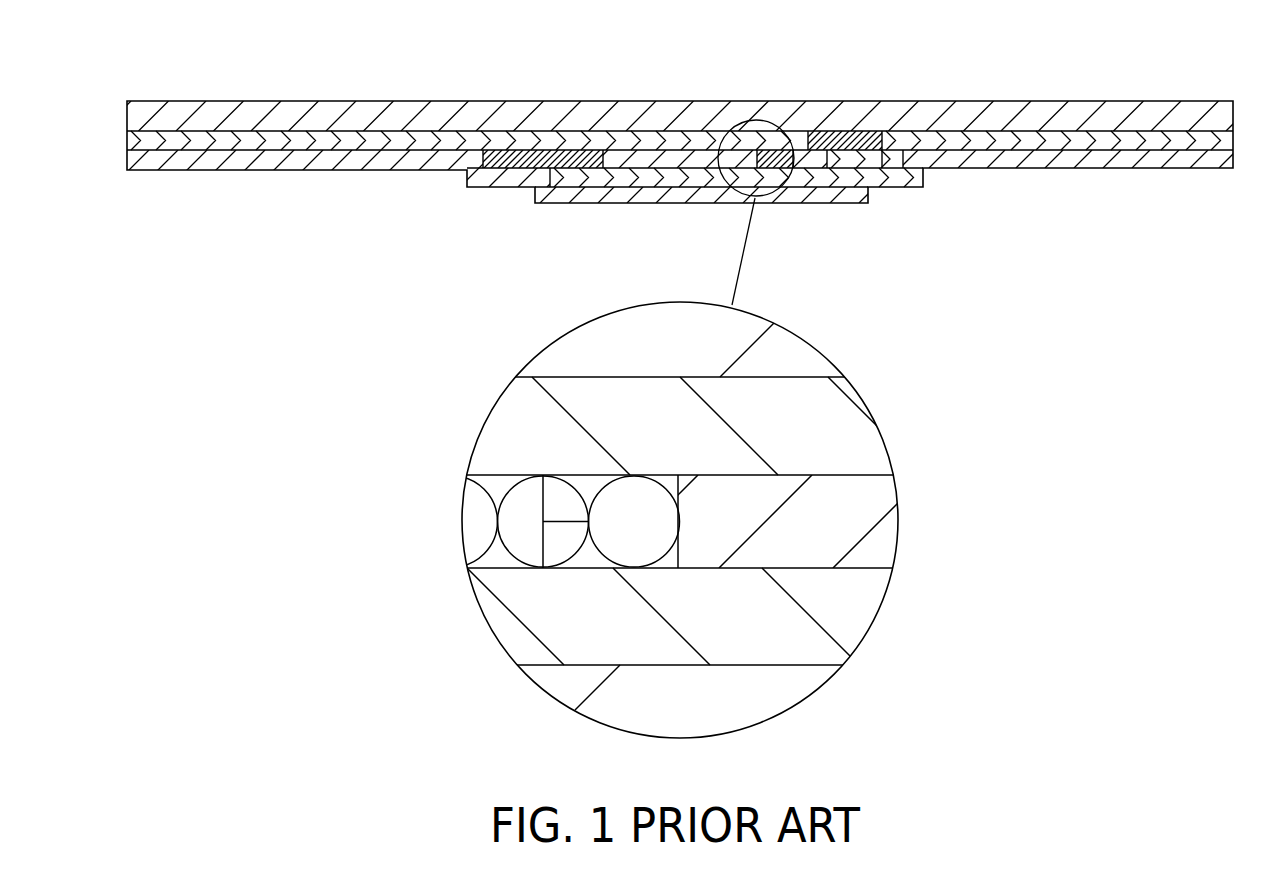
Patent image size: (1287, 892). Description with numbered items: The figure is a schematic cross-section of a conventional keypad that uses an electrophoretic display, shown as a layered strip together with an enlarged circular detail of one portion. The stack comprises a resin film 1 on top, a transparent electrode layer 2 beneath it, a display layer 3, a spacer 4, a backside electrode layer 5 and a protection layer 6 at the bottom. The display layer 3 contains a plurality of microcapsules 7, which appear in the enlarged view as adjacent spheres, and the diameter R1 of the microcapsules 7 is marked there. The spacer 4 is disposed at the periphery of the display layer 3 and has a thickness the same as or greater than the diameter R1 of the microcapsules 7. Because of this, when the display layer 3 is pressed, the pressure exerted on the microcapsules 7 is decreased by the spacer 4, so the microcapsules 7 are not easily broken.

The resin film 1 is at (201, 110).
The transparent electrode layer 2 is at (305, 110).
The display layer 3 is at (627, 155).
The spacer 4 is at (510, 158).
The backside electrode layer 5 is at (1087, 145).
The protection layer 6 is at (210, 162).
The microcapsules 7 is at (513, 490).
The diameter of the microcapsules R1 is at (543, 523).